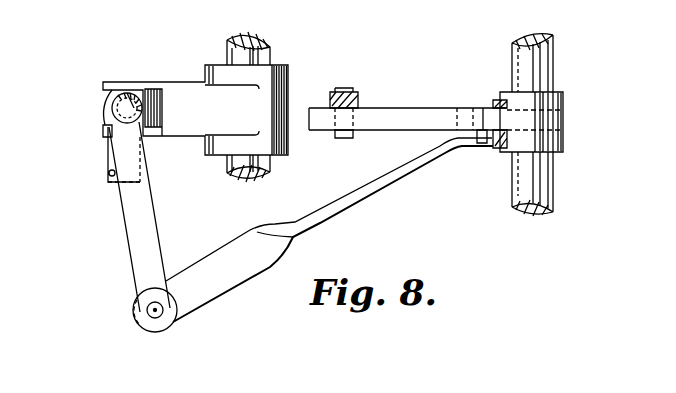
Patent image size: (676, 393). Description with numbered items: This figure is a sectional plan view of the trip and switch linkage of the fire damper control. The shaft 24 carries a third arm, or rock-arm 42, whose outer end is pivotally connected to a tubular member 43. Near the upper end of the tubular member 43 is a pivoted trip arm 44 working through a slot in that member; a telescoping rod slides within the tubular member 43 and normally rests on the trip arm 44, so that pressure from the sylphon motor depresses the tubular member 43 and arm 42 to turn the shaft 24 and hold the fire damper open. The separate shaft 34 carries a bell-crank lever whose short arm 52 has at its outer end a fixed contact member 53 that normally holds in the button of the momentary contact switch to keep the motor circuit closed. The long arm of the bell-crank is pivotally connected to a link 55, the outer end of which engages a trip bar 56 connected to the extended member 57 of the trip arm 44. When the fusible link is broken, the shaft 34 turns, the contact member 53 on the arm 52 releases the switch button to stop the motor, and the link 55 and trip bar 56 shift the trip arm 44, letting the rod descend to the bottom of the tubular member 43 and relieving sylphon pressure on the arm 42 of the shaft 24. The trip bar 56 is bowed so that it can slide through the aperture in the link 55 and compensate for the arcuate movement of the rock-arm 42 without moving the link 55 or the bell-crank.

The shaft 24 is at (227, 45).
The third arm 42 is at (181, 90).
The tubular member 43 is at (112, 103).
The trip arm 44 is at (108, 137).
The short arm 52 is at (417, 107).
The contact member 53 is at (358, 97).
The shaft 34 is at (557, 63).
The link 55 is at (360, 192).
The trip bar 56 is at (155, 318).
The extended member 57 is at (147, 220).